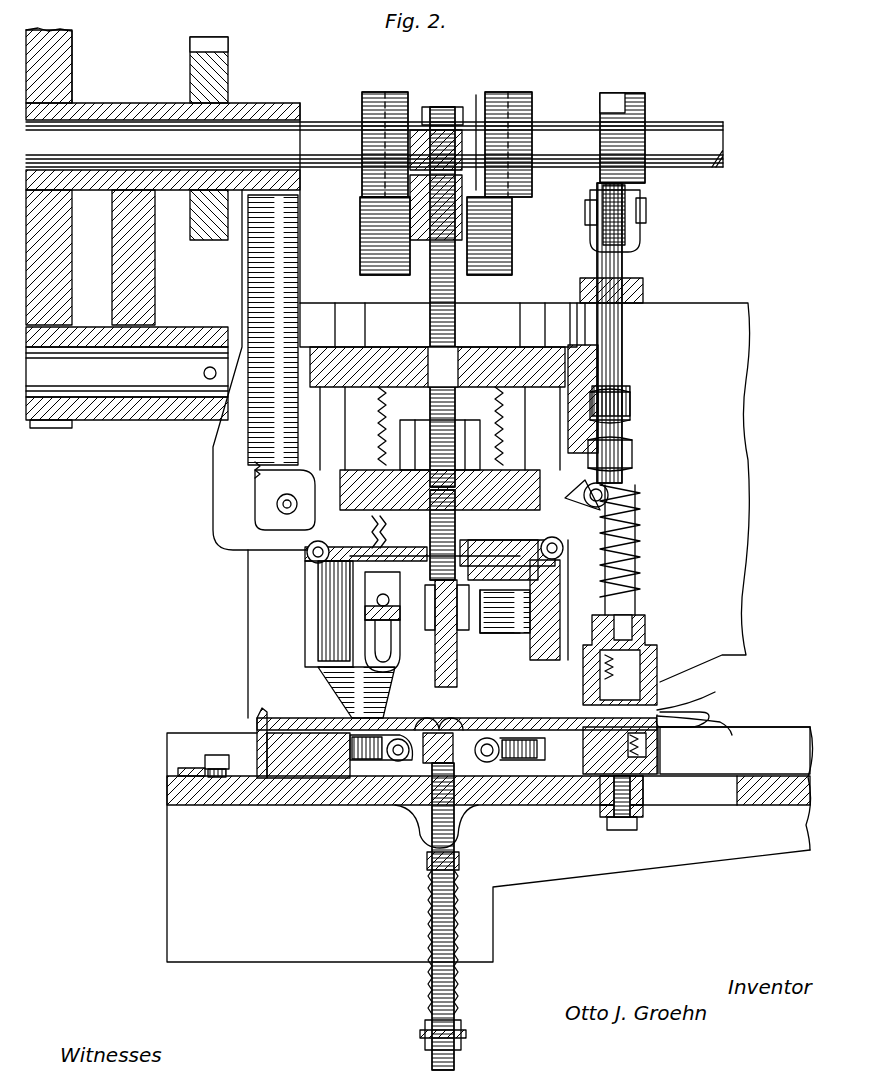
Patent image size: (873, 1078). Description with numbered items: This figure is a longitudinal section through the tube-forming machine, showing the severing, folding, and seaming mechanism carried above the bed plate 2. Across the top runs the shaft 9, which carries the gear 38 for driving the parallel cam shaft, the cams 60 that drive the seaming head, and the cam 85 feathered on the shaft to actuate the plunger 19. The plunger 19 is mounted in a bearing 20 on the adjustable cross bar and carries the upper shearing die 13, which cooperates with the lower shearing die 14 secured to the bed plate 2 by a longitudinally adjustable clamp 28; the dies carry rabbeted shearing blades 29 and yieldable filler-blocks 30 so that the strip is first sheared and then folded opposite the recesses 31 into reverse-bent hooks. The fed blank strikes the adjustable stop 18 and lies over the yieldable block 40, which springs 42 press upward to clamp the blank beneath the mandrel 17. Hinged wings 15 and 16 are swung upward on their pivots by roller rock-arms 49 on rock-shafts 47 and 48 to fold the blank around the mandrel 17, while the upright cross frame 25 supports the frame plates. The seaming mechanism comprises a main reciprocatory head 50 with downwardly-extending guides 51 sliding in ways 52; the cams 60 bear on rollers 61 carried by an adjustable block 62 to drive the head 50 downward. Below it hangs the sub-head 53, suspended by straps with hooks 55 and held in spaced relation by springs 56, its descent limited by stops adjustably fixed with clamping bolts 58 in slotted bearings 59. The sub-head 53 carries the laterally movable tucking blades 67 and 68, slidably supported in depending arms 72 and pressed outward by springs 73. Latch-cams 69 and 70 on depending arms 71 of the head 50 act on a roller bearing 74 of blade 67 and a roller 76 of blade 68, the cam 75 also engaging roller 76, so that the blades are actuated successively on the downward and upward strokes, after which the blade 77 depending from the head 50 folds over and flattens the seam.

The bed plate 2 is at (512, 800).
The shaft 9 is at (560, 126).
The shearing die 13 is at (663, 675).
The shearing die 14 is at (660, 748).
The hinged wing 15 is at (370, 722).
The hinged wing 16 is at (512, 720).
The mandrel 17 is at (436, 678).
The stop 18 is at (258, 712).
The plunger 19 is at (648, 582).
The bearing 20 is at (648, 285).
The upright cross frame 25 is at (252, 272).
The clamp 28 is at (600, 820).
The rabbeted shearing blade 29 is at (663, 692).
The yieldable filler-block 30 is at (606, 692).
The rabbet or recess 31 is at (700, 714).
The gear 38 is at (232, 78).
The yieldable block 40 is at (432, 740).
The spring 42 is at (462, 976).
The rock-shaft 47 is at (395, 758).
The rock-shaft 48 is at (492, 762).
The roller rock-arm 49 is at (365, 748).
The main reciprocatory head 50 is at (490, 352).
The guide 51 is at (640, 492).
The way 52 is at (365, 640).
The sub-head 53 is at (605, 478).
The hook 55 is at (430, 396).
The spring 56 is at (380, 386).
The clamping bolt 58 is at (372, 612).
The slotted bearing 59 is at (360, 653).
The cam 60 is at (398, 92).
The roller 61 is at (512, 226).
The block 62 is at (486, 125).
The tucking blade 67 is at (428, 600).
The tucking blade 68 is at (365, 597).
The latch-cam 69 is at (635, 512).
The latch-cam 70 is at (275, 505).
The depending arm 71 is at (600, 370).
The depending arm 72 is at (630, 560).
The spring 73 is at (400, 530).
The roller bearing 74 is at (560, 553).
The cam 75 is at (310, 510).
The roller 76 is at (340, 548).
The blade 77 is at (440, 445).
The cam 85 is at (643, 100).